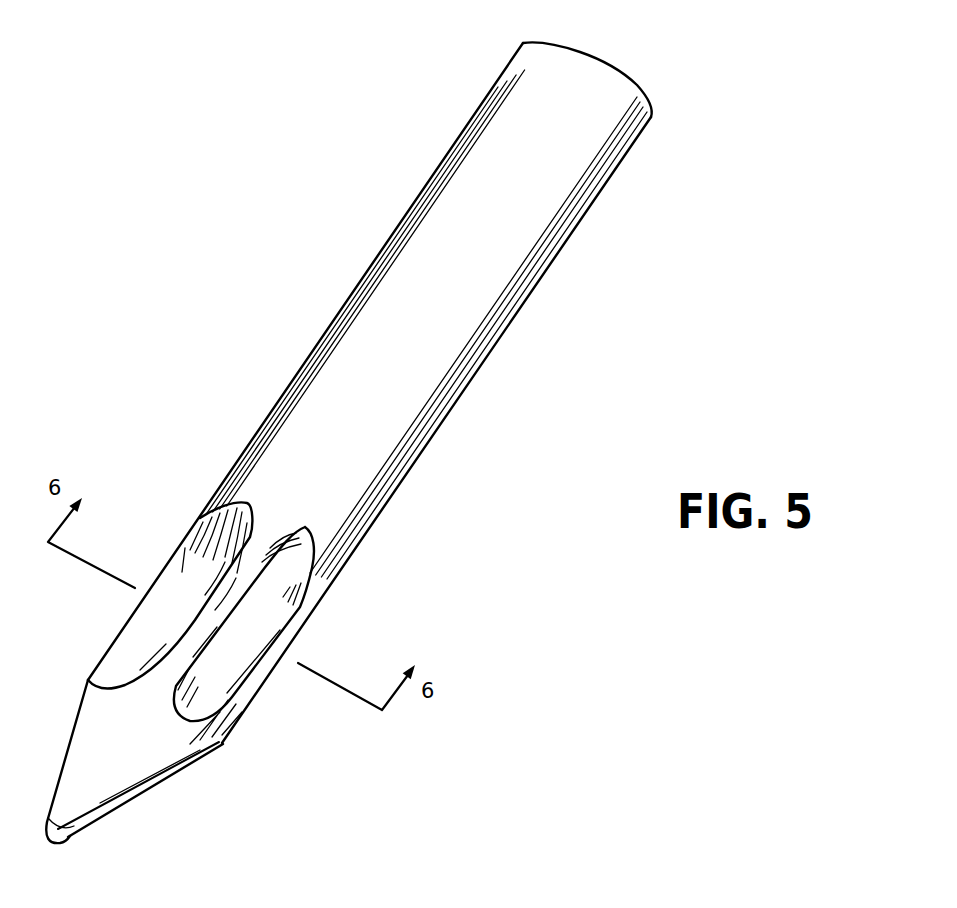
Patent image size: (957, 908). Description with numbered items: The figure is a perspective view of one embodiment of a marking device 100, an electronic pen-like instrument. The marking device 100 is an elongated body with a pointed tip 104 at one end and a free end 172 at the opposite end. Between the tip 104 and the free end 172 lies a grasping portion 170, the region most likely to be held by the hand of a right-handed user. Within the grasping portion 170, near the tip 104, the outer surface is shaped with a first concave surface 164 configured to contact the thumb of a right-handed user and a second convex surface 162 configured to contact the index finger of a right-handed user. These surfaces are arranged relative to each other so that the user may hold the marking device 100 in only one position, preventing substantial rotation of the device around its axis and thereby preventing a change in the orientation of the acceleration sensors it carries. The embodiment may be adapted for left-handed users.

The marking device 100 is at (426, 470).
The tip 104 is at (62, 842).
The second convex surface 162 is at (187, 568).
The first concave surface 164 is at (258, 635).
The grasping portion 170 is at (320, 610).
The free end 172 is at (618, 72).